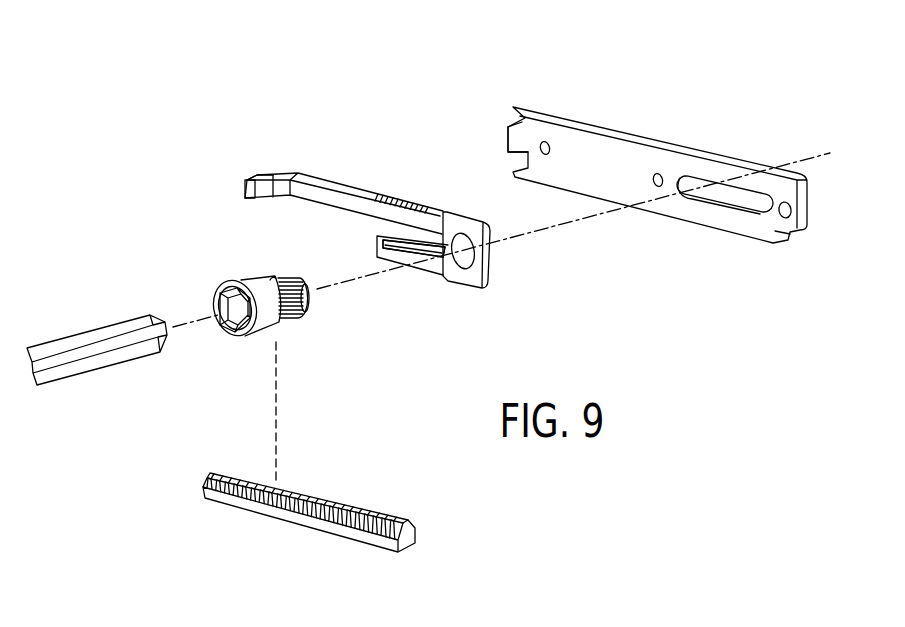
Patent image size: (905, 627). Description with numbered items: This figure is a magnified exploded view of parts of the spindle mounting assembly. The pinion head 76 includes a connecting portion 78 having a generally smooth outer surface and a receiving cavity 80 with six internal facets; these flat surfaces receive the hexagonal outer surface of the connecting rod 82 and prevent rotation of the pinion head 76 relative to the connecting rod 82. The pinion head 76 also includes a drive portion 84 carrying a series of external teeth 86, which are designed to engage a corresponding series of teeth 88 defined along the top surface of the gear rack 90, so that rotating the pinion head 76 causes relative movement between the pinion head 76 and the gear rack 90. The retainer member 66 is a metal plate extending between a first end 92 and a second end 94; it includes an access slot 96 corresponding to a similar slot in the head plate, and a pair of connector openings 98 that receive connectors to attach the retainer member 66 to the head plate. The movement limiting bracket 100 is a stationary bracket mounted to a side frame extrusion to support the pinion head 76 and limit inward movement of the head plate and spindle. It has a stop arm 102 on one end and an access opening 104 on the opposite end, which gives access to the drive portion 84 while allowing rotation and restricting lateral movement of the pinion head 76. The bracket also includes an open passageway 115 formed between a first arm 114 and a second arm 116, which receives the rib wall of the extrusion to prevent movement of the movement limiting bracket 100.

The retainer member 66 is at (573, 117).
The first end 92 is at (807, 215).
The second end 94 is at (508, 140).
The access slot 96 is at (732, 195).
The connector openings 98 is at (546, 141).
The movement limiting bracket 100 is at (320, 175).
The stop arm 102 is at (257, 176).
The access opening 104 is at (464, 272).
The first arm 114 is at (393, 217).
The open passageway 115 is at (420, 238).
The second arm 116 is at (425, 270).
The pinion head 76 is at (238, 307).
The connecting portion 78 is at (258, 330).
The receiving cavity 80 is at (218, 303).
The connecting rod 82 is at (85, 366).
The drive portion 84 is at (300, 310).
The teeth 86 is at (224, 275).
The teeth 88 is at (309, 528).
The gear rack 90 is at (300, 527).